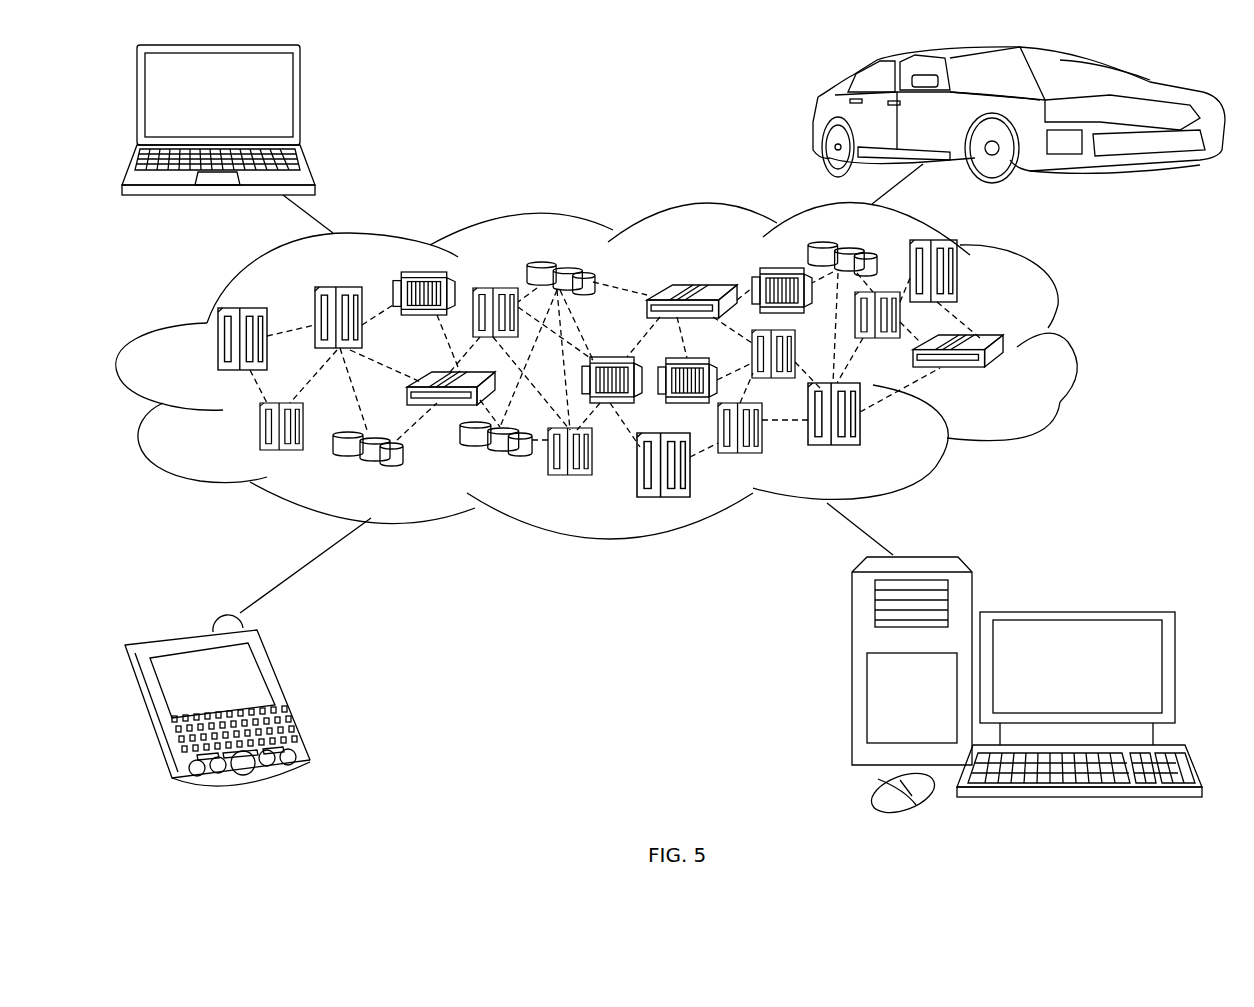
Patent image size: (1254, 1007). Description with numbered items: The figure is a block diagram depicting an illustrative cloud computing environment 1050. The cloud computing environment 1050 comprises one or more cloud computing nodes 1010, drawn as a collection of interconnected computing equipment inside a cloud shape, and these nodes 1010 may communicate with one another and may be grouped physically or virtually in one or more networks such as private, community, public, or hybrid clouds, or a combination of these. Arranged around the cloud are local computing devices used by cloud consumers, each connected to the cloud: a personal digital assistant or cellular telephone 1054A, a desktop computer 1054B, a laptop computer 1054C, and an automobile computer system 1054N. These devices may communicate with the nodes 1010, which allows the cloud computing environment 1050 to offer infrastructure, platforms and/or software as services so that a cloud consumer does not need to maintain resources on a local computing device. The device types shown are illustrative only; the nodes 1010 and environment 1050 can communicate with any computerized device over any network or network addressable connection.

The cloud computing environment 1050 is at (1077, 352).
The cloud computing nodes 1010 is at (1012, 380).
The personal digital assistant or cellular telephone 1054A is at (289, 694).
The desktop computer 1054B is at (1087, 590).
The laptop computer 1054C is at (298, 103).
The automobile computer system 1054N is at (818, 115).